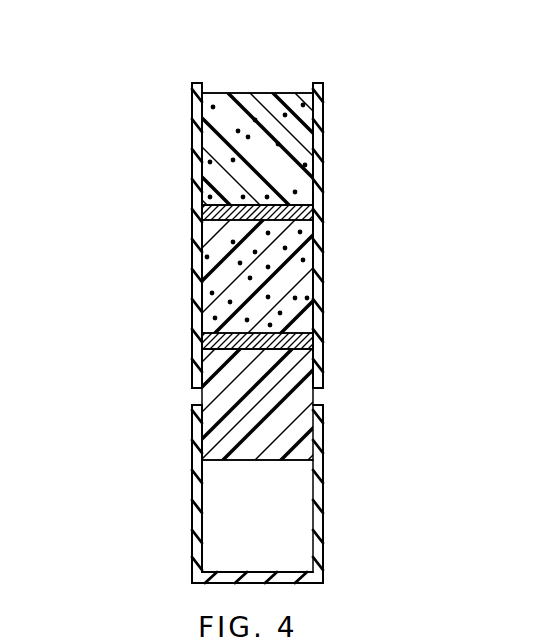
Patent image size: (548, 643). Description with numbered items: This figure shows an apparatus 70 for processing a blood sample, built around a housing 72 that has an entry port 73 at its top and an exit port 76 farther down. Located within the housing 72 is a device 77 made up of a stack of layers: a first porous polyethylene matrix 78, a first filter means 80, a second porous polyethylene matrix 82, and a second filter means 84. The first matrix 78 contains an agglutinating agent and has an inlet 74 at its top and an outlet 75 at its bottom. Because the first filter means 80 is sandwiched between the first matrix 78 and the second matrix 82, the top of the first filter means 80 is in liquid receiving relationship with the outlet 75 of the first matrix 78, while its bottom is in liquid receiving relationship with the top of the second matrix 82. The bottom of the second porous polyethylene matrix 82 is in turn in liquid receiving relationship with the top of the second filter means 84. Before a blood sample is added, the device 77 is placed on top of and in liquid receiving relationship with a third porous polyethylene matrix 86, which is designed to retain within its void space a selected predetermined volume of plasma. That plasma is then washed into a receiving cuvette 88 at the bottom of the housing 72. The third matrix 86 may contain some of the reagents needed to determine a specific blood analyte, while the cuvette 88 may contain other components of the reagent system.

The apparatus 70 is at (188, 158).
The housing 72 is at (197, 182).
The entry port 73 is at (228, 88).
The inlet 74 is at (270, 92).
The outlet 75 is at (283, 197).
The exit port 76 is at (242, 352).
The device 77 is at (333, 118).
The first porous polyethylene matrix 78 is at (308, 152).
The first filter means 80 is at (313, 204).
The second porous polyethylene matrix 82 is at (292, 275).
The second filter means 84 is at (323, 318).
The third porous polyethylene matrix 86 is at (283, 413).
The receiving cuvette 88 is at (293, 513).